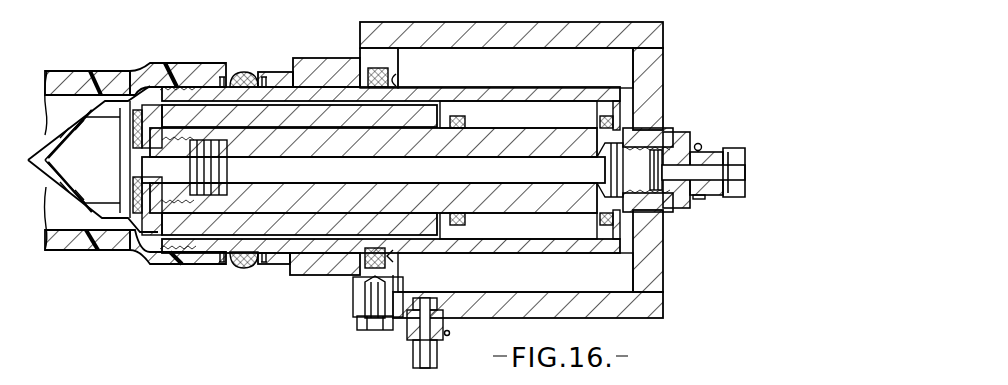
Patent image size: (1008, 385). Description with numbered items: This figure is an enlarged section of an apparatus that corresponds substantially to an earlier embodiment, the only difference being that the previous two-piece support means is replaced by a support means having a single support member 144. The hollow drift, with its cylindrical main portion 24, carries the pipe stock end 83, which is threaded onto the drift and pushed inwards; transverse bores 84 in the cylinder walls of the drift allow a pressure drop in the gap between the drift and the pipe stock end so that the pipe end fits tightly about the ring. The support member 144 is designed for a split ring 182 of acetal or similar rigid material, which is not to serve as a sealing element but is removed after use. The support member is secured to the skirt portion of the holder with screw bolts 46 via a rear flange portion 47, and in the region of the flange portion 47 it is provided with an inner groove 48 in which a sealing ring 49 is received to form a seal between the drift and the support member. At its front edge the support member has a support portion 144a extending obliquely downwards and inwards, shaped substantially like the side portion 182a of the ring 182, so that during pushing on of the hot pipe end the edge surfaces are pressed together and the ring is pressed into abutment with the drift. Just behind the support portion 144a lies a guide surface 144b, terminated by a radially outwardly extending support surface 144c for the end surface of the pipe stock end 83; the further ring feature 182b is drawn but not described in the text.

The pipe stock end 83 is at (110, 80).
The main portion 24 is at (183, 78).
The transverse bores 84 is at (222, 76).
The guide surface 144b is at (276, 72).
The inner groove 48 is at (389, 76).
The sealing ring 49 is at (397, 80).
The retaining pin 182b is at (230, 241).
The side portion 182a is at (233, 263).
The split ring 182 is at (253, 264).
The support portion 144a is at (258, 262).
The support member 144 is at (310, 255).
The rear flange portion 47 is at (355, 284).
The support surface 144c is at (318, 208).
The screw bolts 46 is at (368, 331).